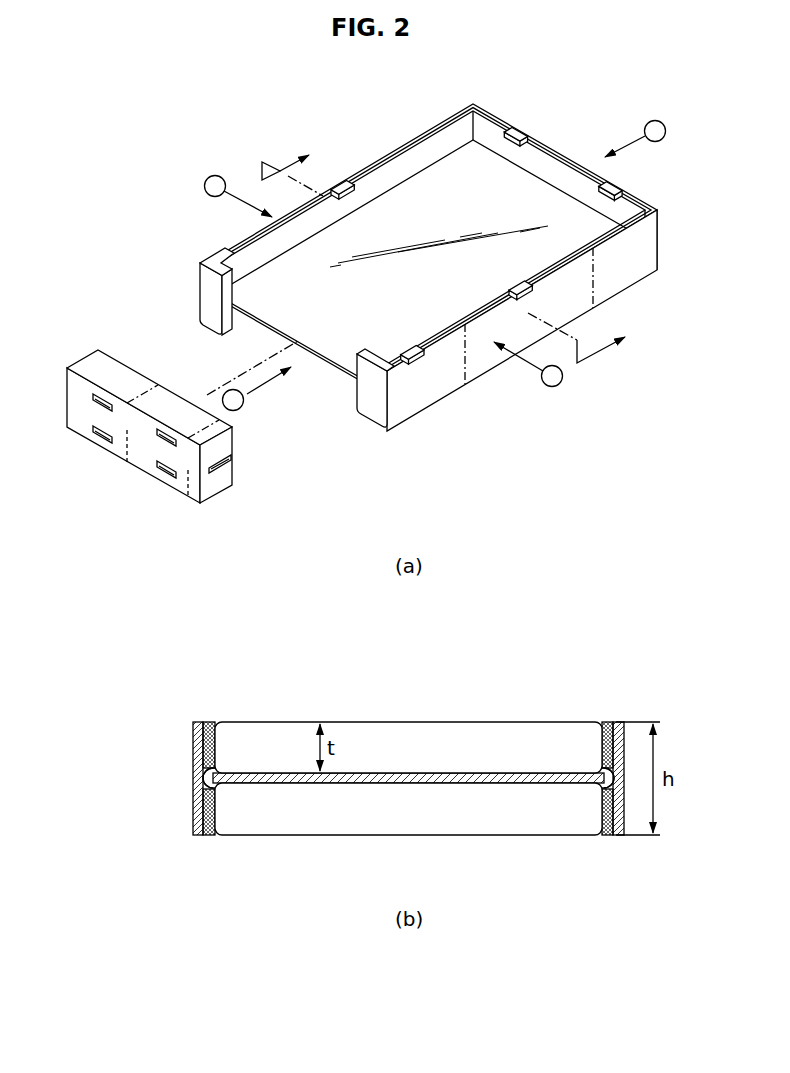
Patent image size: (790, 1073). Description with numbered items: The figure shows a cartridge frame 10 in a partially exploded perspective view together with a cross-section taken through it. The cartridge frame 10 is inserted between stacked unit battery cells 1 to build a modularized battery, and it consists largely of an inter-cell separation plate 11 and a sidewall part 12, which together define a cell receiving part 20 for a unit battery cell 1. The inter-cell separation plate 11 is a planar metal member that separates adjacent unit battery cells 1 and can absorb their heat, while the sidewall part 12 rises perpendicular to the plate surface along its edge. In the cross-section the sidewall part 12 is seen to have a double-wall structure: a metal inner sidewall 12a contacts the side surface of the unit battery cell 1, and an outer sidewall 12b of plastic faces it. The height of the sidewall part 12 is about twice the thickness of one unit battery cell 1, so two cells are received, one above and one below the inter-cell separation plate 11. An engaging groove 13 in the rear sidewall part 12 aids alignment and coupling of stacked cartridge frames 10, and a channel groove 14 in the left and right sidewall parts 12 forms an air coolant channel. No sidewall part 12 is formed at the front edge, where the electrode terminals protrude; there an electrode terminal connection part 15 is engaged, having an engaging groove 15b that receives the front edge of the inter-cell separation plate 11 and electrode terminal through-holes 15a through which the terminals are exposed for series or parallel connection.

The cartridge frame 10 is at (176, 193).
The inter-cell separation plate 11 is at (545, 197).
The sidewall part 12 is at (423, 154).
The inner sidewall 12a is at (604, 721).
The outer sidewall 12b is at (620, 721).
The engaging groove 13 is at (523, 130).
The channel groove 14 is at (540, 271).
The electrode terminal connection part 15 is at (148, 455).
The electrode terminal through-hole 15a is at (170, 474).
The engaging groove 15b is at (241, 452).
The cell receiving part 20 is at (458, 219).
The unit battery cell 1 is at (426, 738).